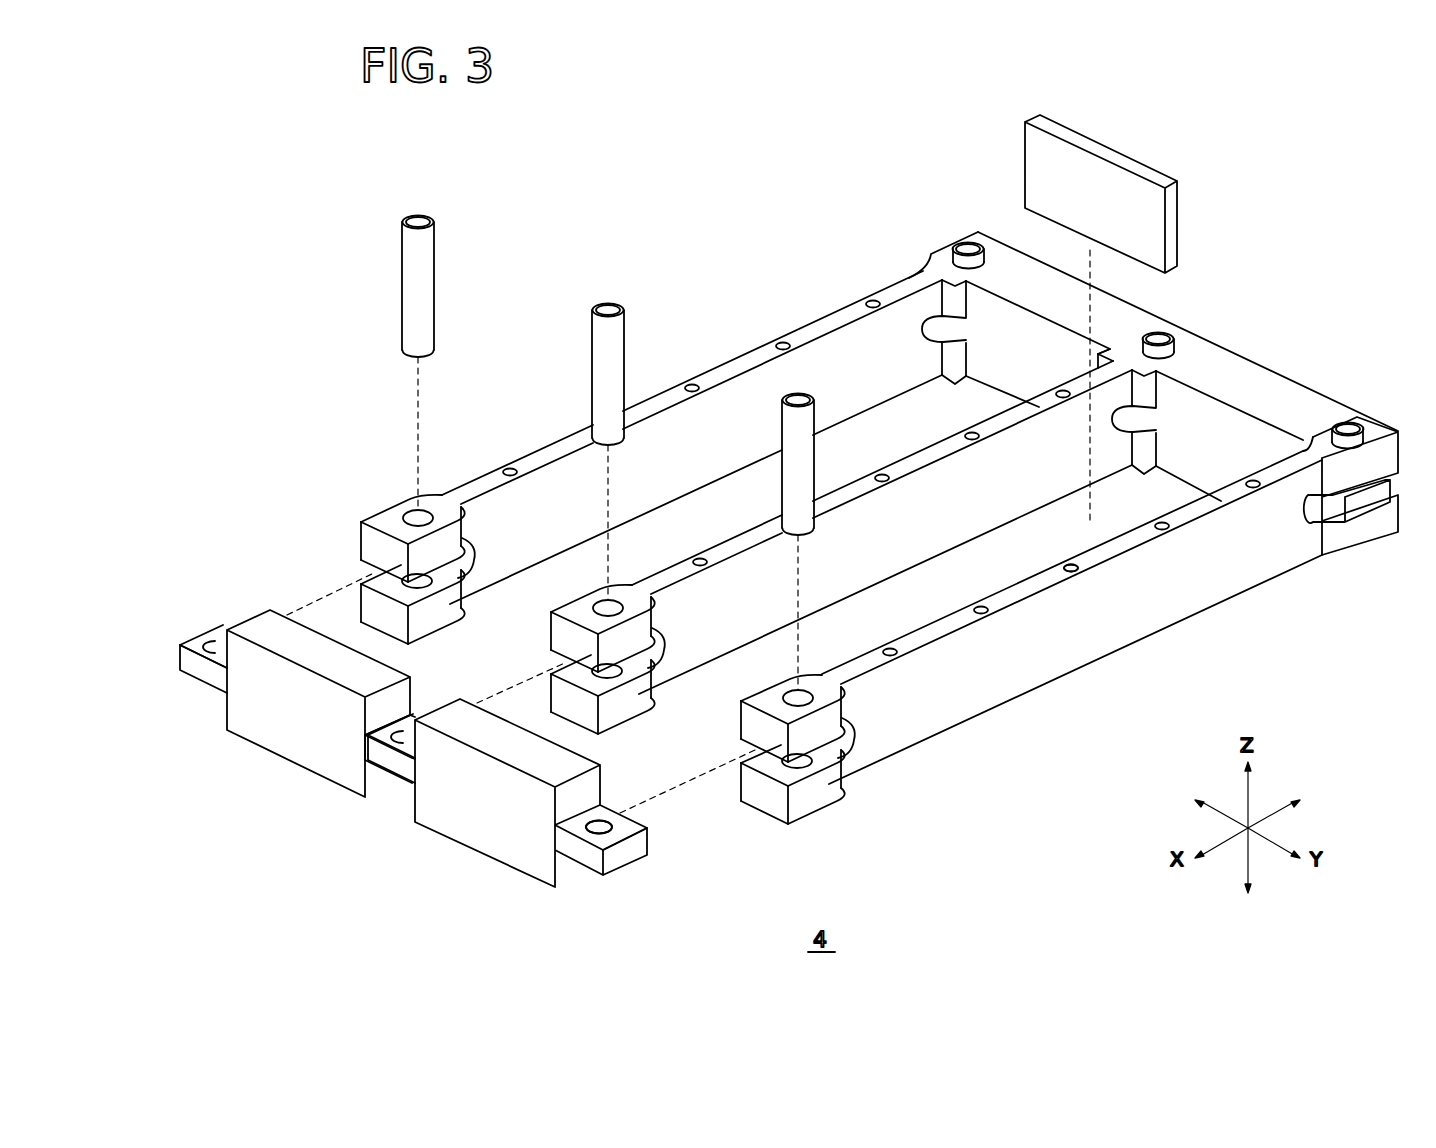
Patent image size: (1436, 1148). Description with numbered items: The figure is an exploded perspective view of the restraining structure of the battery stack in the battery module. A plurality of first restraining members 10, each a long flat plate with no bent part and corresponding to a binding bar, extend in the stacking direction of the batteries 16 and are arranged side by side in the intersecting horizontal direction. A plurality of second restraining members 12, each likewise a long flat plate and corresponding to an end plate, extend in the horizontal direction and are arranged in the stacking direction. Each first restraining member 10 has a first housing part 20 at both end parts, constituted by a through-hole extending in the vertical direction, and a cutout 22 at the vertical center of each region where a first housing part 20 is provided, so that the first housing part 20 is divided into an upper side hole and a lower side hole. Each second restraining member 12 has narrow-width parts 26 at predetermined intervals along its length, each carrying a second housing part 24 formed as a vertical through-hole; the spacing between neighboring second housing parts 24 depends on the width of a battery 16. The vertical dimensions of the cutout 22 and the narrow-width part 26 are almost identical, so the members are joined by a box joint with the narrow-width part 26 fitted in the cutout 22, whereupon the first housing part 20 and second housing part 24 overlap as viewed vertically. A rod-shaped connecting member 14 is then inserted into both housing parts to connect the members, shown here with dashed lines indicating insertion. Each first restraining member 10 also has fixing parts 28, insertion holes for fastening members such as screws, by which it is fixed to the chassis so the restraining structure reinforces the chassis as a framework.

The first restraining member 10 is at (835, 303).
The second restraining member 12 is at (462, 842).
The connecting member 14 is at (418, 212).
The battery 16 is at (1177, 220).
The first housing part 20 is at (840, 687).
The cutout 22 is at (827, 752).
The second housing part 24 is at (615, 833).
The narrow-width part 26 is at (203, 675).
The fixing part 28 is at (1097, 568).